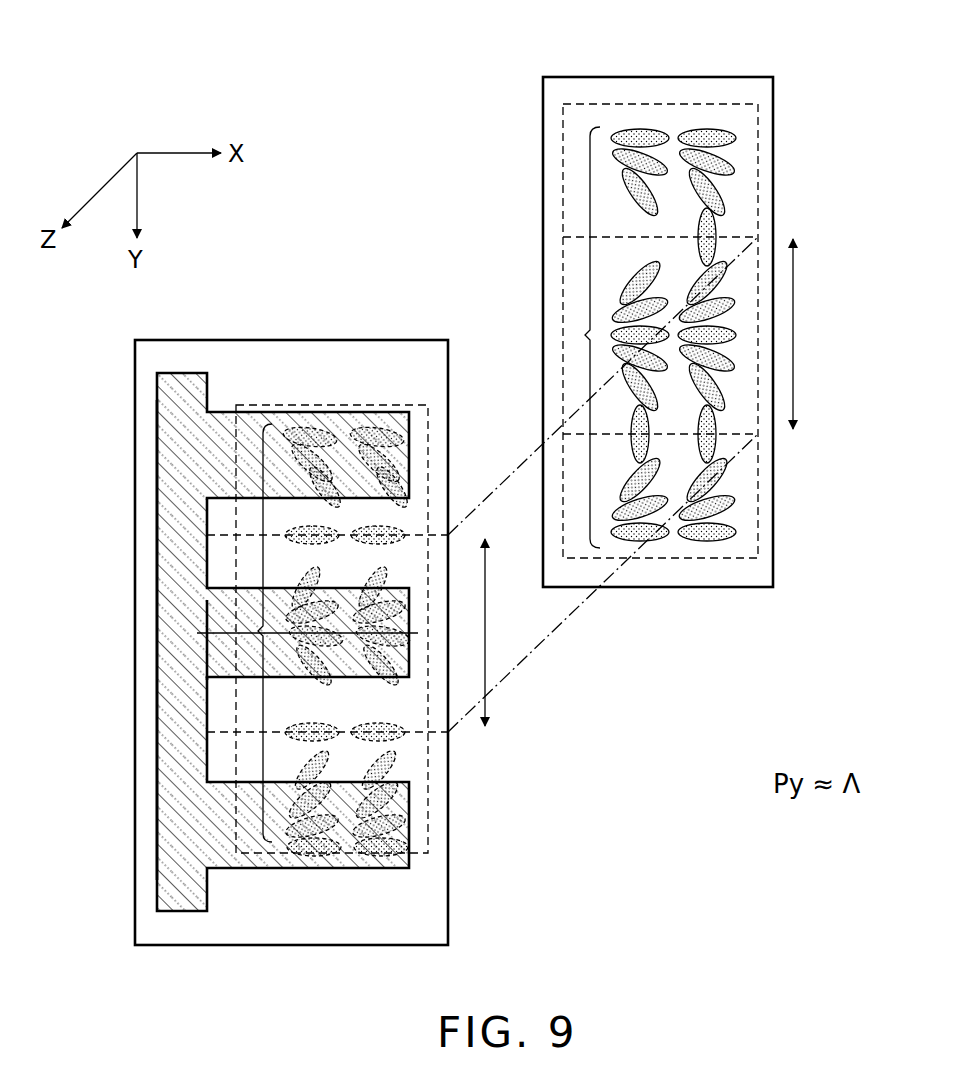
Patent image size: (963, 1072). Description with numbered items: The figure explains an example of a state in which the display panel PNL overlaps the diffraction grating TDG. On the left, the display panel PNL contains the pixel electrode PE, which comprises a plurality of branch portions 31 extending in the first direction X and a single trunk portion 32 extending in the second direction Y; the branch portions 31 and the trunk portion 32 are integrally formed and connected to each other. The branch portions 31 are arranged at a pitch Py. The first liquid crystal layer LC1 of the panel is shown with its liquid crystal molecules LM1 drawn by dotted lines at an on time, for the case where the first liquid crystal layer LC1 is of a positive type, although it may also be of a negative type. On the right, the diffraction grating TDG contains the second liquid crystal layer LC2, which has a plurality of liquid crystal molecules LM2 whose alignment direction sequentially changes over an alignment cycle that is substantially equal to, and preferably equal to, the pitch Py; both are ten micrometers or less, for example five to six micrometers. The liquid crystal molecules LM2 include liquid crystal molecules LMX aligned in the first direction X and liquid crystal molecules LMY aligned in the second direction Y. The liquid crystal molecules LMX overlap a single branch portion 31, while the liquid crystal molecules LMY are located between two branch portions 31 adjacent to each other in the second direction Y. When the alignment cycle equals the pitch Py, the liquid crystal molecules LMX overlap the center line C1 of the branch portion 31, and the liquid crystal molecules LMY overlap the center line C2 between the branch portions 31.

The display panel PNL is at (313, 340).
The pixel electrode PE is at (157, 376).
The branch portions 31 is at (223, 427).
The trunk portion 32 is at (157, 545).
The first liquid crystal layer LC1 is at (416, 404).
The liquid crystal molecules LM1 is at (258, 631).
The center line C1 is at (412, 633).
The center line C2 is at (432, 535).
The pitch Py is at (503, 632).
The diffraction grating TDG is at (773, 77).
The second liquid crystal layer LC2 is at (758, 110).
The liquid crystal molecules LM2 is at (585, 335).
The liquid crystal molecules LMY is at (718, 228).
The liquid crystal molecules LMX is at (728, 328).